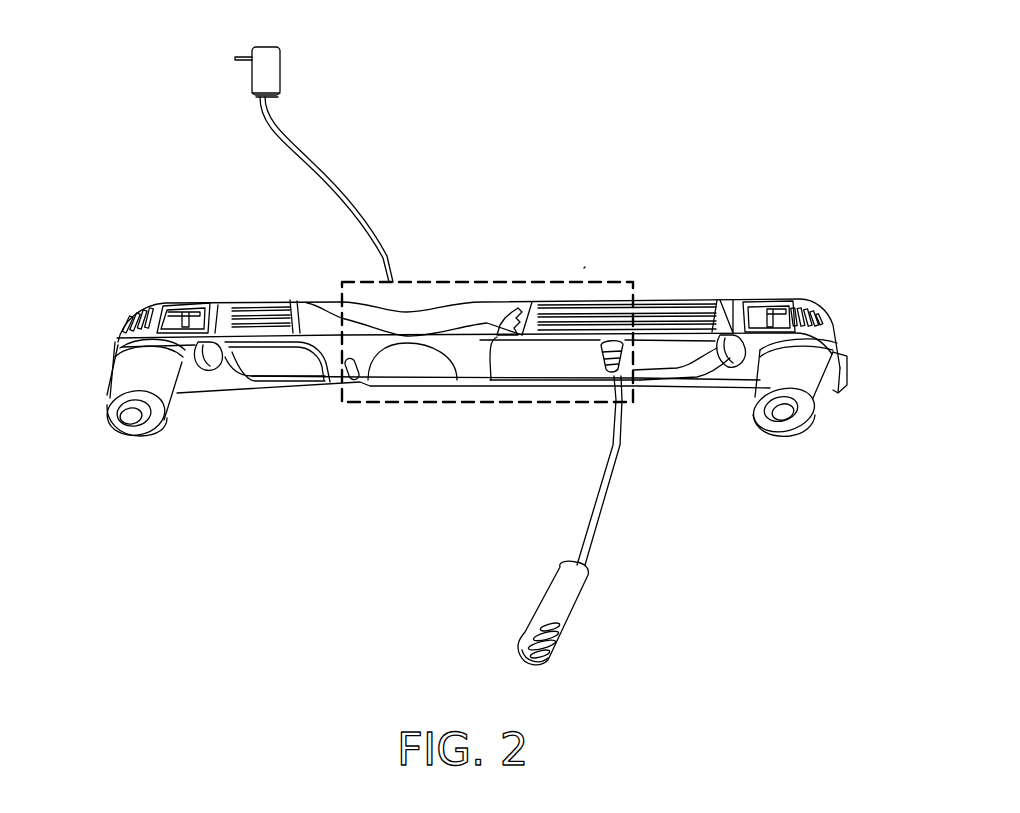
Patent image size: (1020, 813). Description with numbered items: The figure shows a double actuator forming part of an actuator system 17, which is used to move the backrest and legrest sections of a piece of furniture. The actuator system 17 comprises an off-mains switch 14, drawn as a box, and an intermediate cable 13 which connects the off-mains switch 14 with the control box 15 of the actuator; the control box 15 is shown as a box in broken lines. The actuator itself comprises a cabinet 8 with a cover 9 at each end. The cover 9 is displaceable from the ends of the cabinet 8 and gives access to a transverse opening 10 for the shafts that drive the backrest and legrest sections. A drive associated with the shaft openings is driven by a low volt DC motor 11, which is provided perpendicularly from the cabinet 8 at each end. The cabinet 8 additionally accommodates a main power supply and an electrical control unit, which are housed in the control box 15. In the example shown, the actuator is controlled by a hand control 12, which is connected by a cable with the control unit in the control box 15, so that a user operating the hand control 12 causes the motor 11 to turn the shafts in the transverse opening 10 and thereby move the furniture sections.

The cabinet 8 is at (665, 298).
The cover 9 is at (148, 308).
The transverse opening 10 is at (210, 350).
The low volt DC motor 11 is at (150, 440).
The hand control 12 is at (555, 603).
The intermediate cable 13 is at (312, 158).
The off-mains switch 14 is at (270, 55).
The control box 15 is at (455, 281).
The actuator system 17 is at (585, 267).